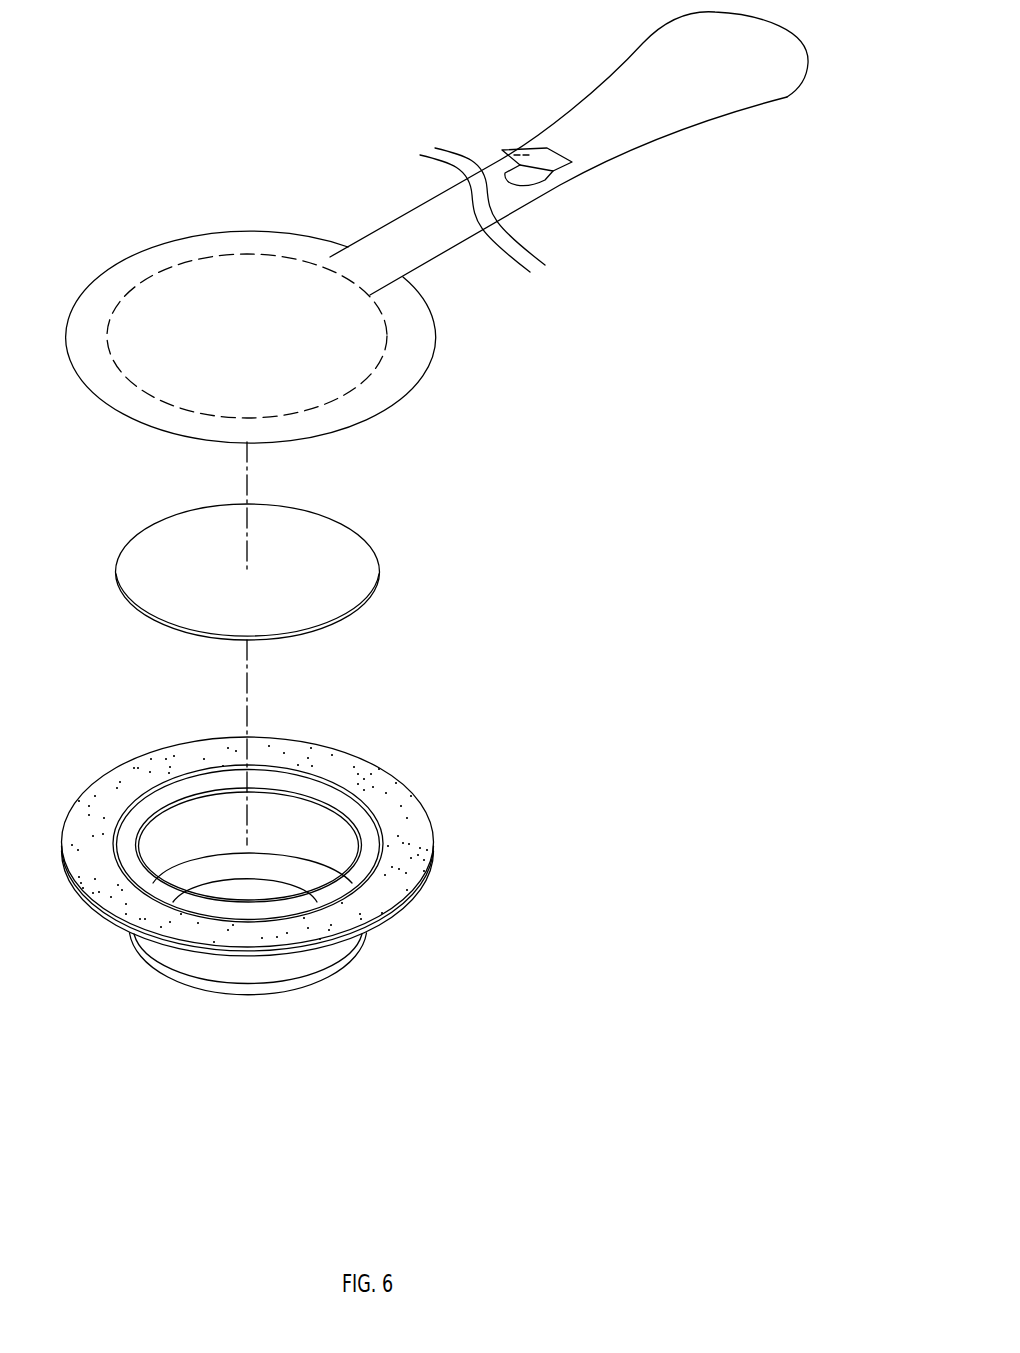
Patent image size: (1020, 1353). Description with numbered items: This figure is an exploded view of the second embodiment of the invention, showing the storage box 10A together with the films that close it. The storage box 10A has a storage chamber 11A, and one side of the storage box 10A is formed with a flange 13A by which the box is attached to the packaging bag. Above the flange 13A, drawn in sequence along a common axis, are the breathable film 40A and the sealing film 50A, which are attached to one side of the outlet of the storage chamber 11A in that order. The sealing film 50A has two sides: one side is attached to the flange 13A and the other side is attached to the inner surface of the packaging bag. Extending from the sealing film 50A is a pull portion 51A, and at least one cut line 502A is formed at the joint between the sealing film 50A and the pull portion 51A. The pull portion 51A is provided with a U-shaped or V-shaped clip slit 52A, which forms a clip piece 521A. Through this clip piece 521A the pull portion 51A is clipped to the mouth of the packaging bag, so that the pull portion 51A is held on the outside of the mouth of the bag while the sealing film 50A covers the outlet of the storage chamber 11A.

The storage box 10A is at (332, 955).
The storage chamber 11A is at (305, 832).
The flange 13A is at (403, 847).
The breathable film 40A is at (328, 575).
The sealing film 50A is at (405, 355).
The cut line 502A is at (327, 260).
The pull portion 51A is at (712, 97).
The clip slit 52A is at (547, 183).
The clip piece 521A is at (527, 150).